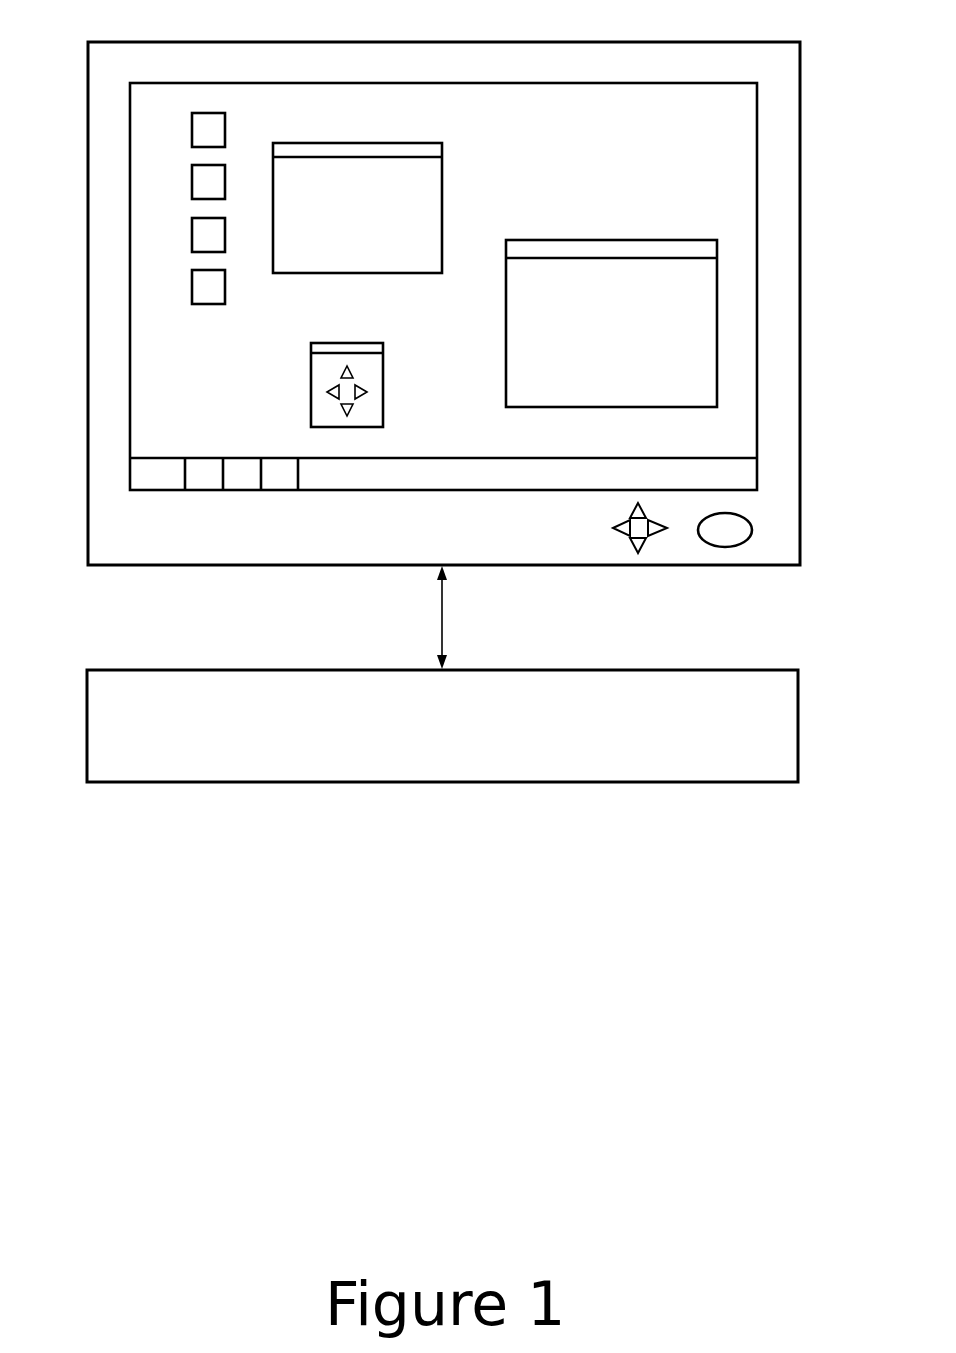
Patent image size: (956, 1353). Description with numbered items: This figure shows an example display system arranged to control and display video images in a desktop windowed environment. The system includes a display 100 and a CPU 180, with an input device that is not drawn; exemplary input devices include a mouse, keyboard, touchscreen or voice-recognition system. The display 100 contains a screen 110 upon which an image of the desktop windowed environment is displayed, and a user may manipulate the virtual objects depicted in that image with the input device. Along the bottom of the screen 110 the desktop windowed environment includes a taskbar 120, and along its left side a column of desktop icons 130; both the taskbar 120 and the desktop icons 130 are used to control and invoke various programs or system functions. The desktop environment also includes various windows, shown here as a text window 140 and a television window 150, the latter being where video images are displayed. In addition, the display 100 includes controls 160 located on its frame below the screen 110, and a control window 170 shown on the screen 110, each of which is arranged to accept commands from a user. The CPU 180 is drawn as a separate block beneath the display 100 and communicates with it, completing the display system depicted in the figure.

The display 100 is at (177, 566).
The screen 110 is at (452, 106).
The taskbar 120 is at (347, 493).
The desktop icons 130 is at (226, 128).
The text window 140 is at (338, 274).
The television window 150 is at (587, 240).
The controls 160 is at (683, 566).
The control window 170 is at (310, 373).
The CPU 180 is at (287, 783).